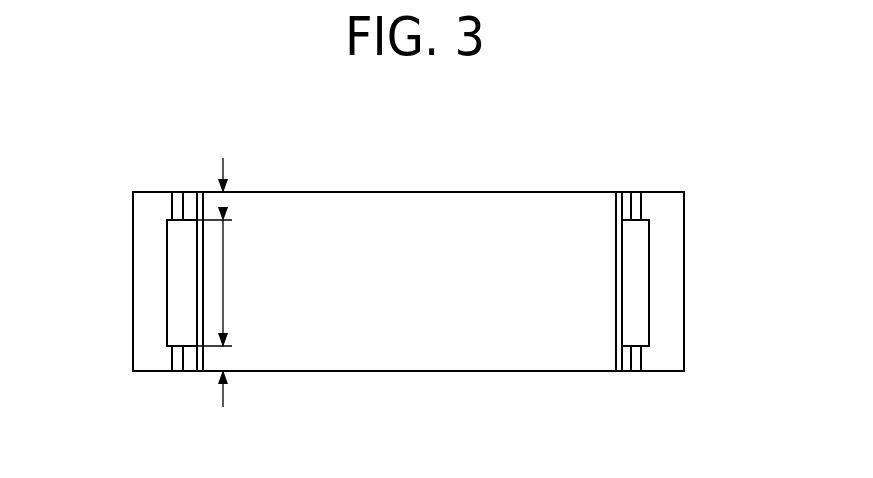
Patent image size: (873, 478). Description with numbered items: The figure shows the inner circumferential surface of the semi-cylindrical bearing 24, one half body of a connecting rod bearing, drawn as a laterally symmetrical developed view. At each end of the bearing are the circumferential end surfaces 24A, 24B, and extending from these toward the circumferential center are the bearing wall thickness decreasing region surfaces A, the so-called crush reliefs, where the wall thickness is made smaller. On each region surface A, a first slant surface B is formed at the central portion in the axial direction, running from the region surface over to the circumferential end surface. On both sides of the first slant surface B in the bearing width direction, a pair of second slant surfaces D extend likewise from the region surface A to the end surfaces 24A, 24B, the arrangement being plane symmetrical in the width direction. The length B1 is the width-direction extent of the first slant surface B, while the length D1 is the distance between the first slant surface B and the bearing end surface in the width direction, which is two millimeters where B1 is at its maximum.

The semi-cylindrical bearing 24 is at (424, 200).
The circumferential end surface 24A is at (133, 312).
The circumferential end surface 24B is at (683, 312).
The bearing wall thickness decreasing region surface A is at (197, 200).
The first slant surface B is at (167, 262).
The second slant surface D is at (175, 200).
The length between first slant surface and end surface in bearing width direction D1 is at (217, 210).
The length in bearing width direction of first slant surface B1 is at (244, 283).